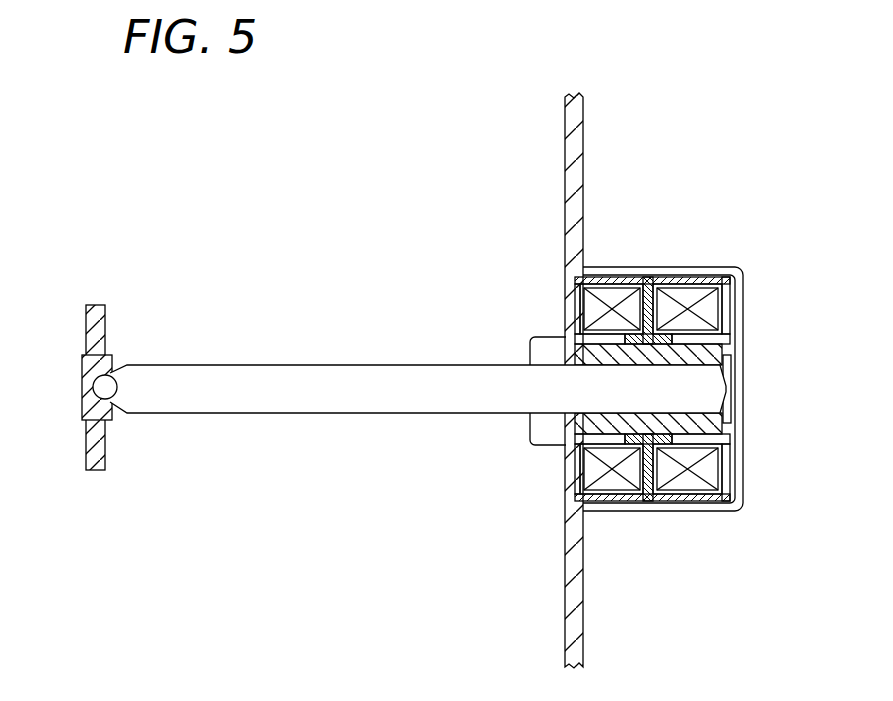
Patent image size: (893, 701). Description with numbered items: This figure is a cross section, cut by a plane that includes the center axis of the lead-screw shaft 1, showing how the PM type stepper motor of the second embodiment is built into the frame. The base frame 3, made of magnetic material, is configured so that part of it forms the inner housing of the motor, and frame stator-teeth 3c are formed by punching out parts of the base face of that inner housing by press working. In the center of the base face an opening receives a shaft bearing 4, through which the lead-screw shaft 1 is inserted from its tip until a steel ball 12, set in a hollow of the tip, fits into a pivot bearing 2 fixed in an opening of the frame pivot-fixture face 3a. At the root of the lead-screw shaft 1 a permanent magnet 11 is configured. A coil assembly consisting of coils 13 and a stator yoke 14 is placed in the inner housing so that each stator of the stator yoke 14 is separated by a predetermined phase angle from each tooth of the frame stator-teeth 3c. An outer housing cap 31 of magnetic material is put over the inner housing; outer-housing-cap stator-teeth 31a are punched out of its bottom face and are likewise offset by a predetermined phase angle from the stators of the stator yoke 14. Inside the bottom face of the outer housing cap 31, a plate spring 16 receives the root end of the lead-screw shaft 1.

The lead-screw shaft 1 is at (257, 400).
The pivot bearing 2 is at (82, 368).
The base frame 3 is at (577, 188).
The frame pivot-fixture face 3a is at (98, 305).
The frame stator-teeth 3c is at (585, 315).
The shaft bearing 4 is at (542, 428).
The permanent magnet 11 is at (707, 432).
The steel ball 12 is at (93, 390).
The coils 13 is at (687, 483).
The stator yoke 14 is at (636, 480).
The plate spring 16 is at (731, 363).
The outer housing cap 31 is at (725, 268).
The outer-housing-cap stator-teeth 31a is at (703, 338).